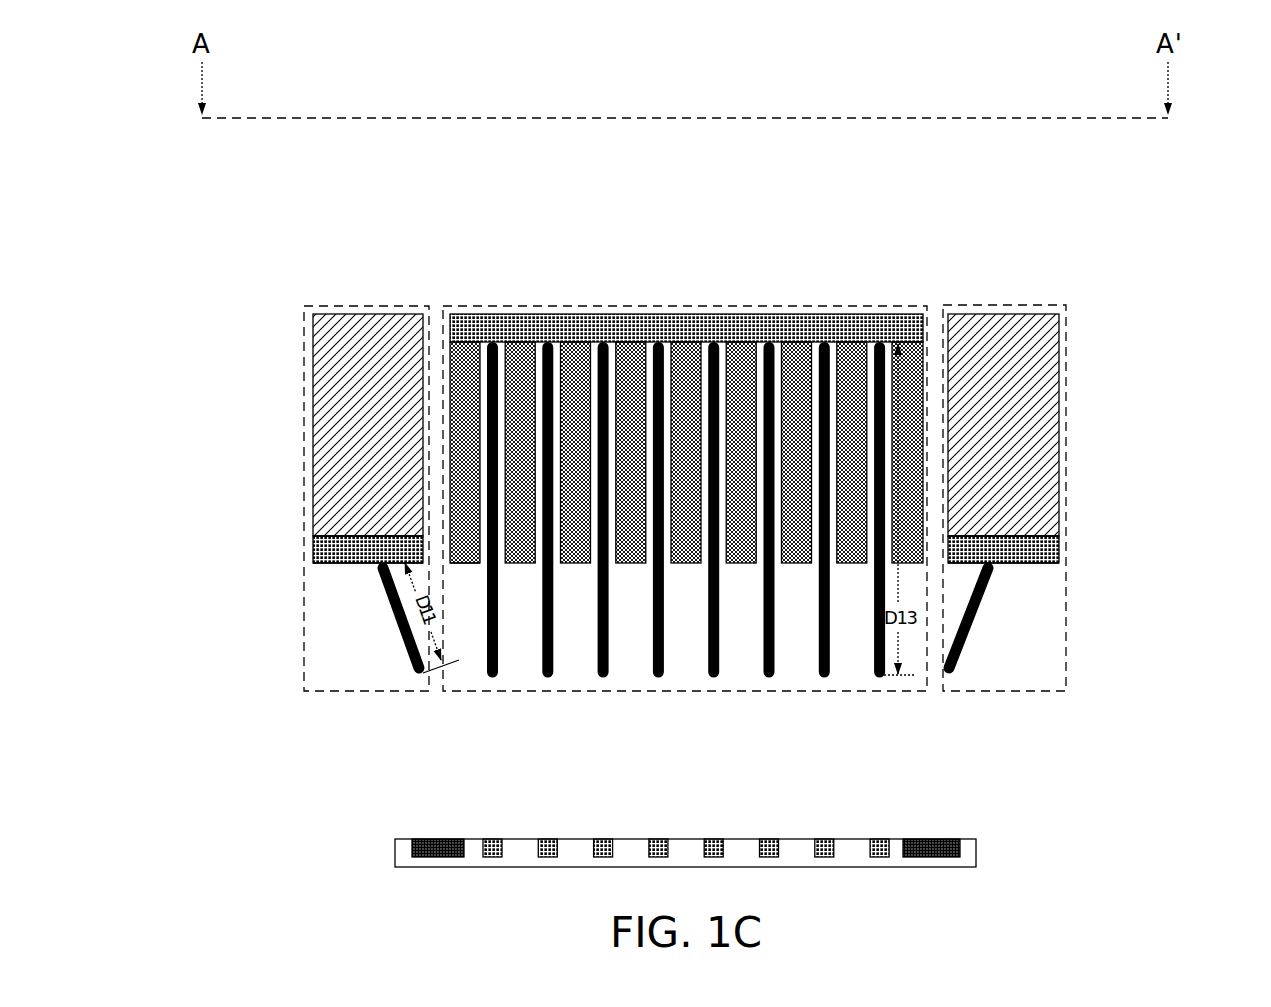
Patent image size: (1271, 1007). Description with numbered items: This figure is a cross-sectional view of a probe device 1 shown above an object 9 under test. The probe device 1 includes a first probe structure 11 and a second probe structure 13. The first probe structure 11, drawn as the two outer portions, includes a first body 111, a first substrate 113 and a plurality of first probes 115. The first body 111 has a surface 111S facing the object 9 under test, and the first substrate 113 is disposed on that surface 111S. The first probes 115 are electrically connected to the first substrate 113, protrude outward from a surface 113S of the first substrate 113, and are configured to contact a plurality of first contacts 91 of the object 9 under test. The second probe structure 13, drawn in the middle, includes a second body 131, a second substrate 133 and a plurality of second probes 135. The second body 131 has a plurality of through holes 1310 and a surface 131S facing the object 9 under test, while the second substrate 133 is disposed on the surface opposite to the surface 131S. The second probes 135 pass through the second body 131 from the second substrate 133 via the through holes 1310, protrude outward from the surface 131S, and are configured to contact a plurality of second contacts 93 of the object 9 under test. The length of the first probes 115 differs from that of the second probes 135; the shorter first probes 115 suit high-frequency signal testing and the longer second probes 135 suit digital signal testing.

The probe device 1 is at (242, 232).
The object under test 9 is at (976, 850).
The first contacts 91 is at (432, 840).
The second contacts 93 is at (883, 837).
The first probe structure 11 is at (304, 420).
The first body 111 is at (313, 348).
The surface of the first body 111S is at (360, 533).
The first substrate 113 is at (313, 540).
The surface of the first substrate 113S is at (330, 565).
The first probes 115 is at (390, 605).
The second probe structure 13 is at (905, 692).
The second body 131 is at (685, 345).
The surface of the second body 131S is at (468, 565).
The through holes 1310 is at (538, 565).
The second substrate 133 is at (885, 313).
The second probes 135 is at (549, 680).